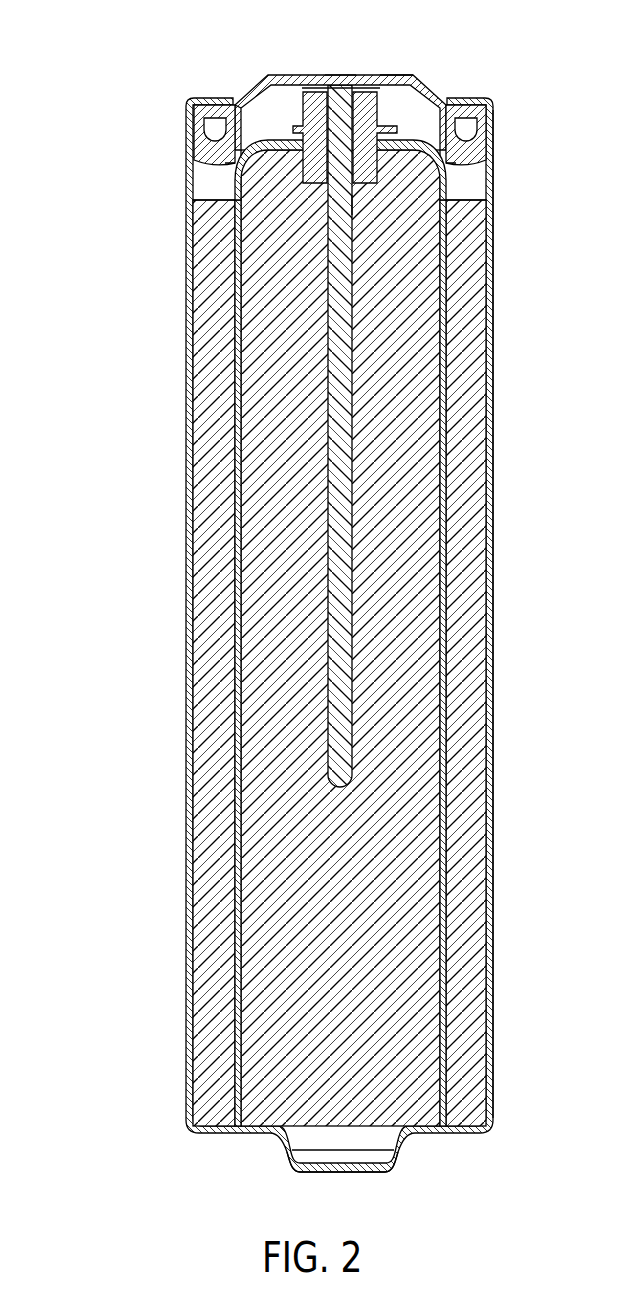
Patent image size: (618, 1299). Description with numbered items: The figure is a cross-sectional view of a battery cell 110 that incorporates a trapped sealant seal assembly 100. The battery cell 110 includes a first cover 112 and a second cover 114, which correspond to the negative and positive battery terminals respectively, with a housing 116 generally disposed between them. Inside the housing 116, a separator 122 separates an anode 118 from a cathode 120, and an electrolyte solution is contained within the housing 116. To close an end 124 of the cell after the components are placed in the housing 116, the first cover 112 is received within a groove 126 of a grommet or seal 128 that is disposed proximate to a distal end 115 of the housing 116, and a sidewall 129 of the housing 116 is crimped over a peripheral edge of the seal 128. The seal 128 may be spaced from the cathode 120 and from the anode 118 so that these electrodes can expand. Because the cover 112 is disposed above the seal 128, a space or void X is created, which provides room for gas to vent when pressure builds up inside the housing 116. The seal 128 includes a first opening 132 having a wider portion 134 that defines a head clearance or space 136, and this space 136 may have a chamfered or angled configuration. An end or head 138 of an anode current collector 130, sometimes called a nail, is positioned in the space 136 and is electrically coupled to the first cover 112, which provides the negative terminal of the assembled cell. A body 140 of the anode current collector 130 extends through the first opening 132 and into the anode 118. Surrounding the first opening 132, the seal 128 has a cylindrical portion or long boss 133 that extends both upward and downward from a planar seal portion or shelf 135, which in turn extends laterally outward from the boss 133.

The seal assembly 100 is at (390, 94).
The battery cell 110 is at (316, 605).
The first cover 112 is at (268, 77).
The second cover 114 is at (296, 1170).
The distal end 115 is at (398, 157).
The housing 116 is at (190, 385).
The anode 118 is at (304, 638).
The cathode 120 is at (212, 747).
The separator 122 is at (236, 927).
The end 124 is at (482, 122).
The groove 126 is at (470, 140).
The seal 128 is at (458, 168).
The sidewall 129 is at (494, 440).
The anode current collector 130 is at (340, 325).
The first opening 132 is at (353, 153).
The boss 133 is at (303, 163).
The wider portion 134 is at (401, 91).
The shelf 135 is at (262, 132).
The head clearance 136 is at (357, 74).
The head 138 is at (334, 88).
The body 140 is at (349, 205).
The void X is at (428, 73).